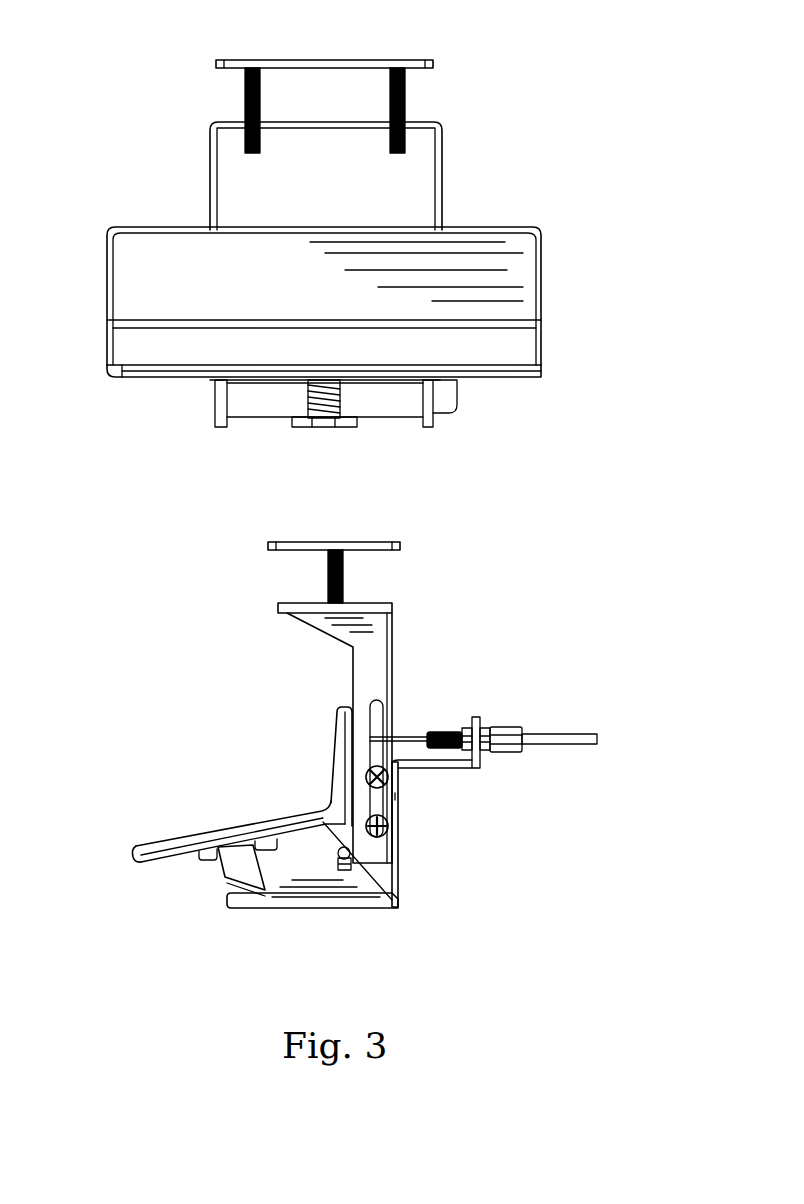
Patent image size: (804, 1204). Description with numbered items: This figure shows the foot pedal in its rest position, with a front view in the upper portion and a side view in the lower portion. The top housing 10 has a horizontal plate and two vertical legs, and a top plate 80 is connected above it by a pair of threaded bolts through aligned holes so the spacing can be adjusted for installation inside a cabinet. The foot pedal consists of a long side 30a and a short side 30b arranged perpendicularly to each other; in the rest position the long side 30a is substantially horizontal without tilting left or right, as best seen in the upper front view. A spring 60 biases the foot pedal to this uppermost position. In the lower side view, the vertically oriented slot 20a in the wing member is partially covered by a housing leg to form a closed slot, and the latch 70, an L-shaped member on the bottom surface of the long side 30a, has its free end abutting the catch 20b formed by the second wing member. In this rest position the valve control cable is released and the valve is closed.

The top housing 10 is at (210, 165).
The slot 20a is at (398, 898).
The catch 20b is at (263, 902).
The long side 30a is at (122, 350).
The short side 30b is at (126, 260).
The spring 60 is at (338, 397).
The latch 70 is at (237, 868).
The top plate 80 is at (351, 60).